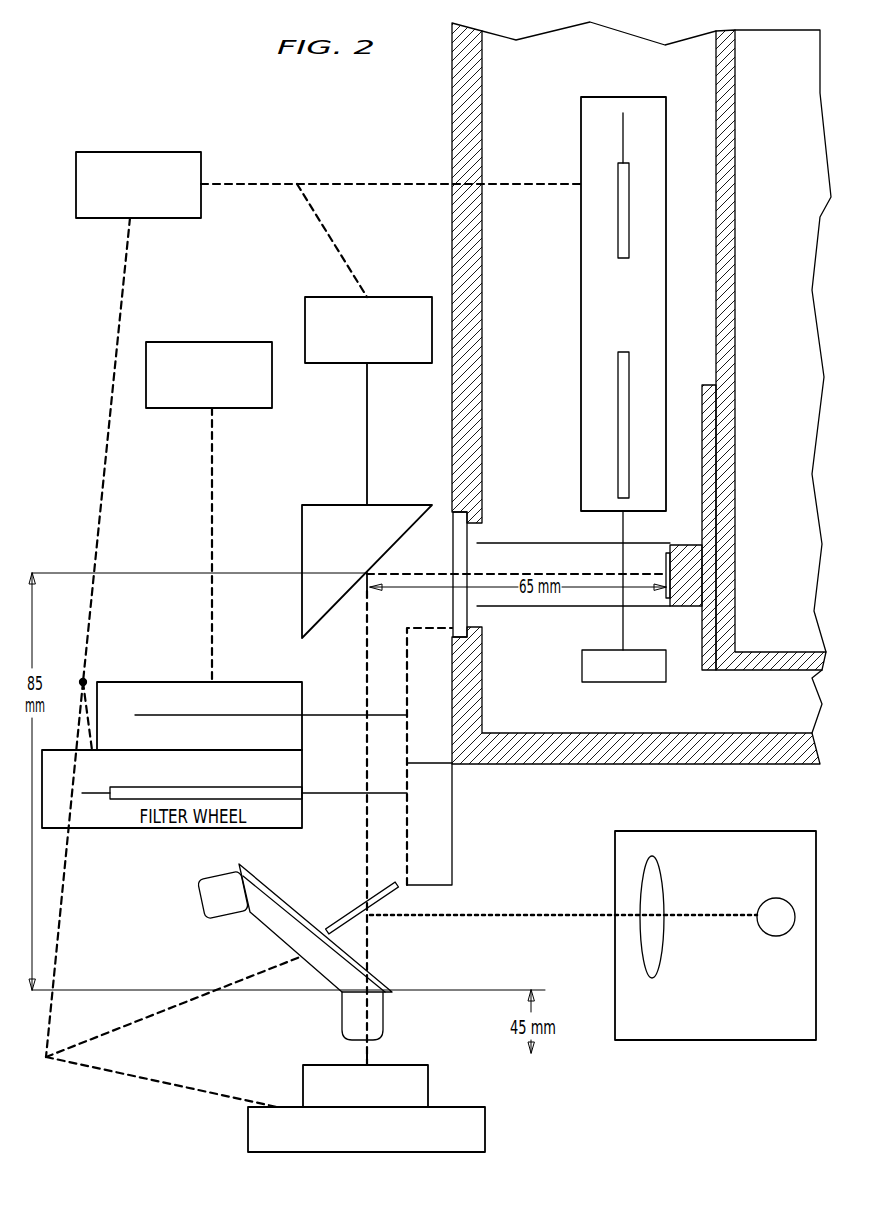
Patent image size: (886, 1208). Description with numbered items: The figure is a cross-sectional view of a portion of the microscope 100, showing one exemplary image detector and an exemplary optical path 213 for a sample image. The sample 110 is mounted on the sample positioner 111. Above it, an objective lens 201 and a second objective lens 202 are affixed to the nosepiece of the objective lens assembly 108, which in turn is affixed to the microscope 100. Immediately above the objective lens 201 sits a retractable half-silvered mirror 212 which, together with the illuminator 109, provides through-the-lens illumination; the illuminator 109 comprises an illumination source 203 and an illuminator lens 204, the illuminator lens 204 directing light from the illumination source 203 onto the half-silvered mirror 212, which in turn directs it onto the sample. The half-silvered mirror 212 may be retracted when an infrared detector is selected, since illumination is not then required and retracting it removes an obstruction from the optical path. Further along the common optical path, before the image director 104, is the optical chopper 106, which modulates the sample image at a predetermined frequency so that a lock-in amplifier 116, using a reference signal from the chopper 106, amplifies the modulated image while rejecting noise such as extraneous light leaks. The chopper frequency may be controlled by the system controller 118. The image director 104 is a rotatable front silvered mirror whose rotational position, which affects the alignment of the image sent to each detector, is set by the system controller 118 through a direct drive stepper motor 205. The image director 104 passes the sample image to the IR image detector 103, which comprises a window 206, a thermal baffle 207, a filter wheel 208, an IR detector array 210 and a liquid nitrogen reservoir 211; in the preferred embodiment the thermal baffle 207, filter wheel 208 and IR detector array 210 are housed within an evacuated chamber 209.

The microscope 100 is at (118, 103).
The system controller 118 is at (173, 152).
The lock-in amplifier 116 is at (238, 342).
The direct drive stepper motor 205 is at (400, 297).
The image director 104 is at (310, 505).
The optical chopper 106 is at (236, 682).
The IR image detector 103 is at (452, 122).
The evacuated chamber 209 is at (496, 93).
The liquid nitrogen reservoir 211 is at (737, 72).
The filter wheel 208 is at (581, 350).
The thermal baffle 207 is at (523, 543).
The window 206 is at (453, 618).
The IR detector array 210 is at (655, 604).
The objective lens assembly 108 is at (262, 884).
The objective lens 202 is at (197, 876).
The retractable half-silvered mirror 212 is at (352, 915).
The objective lens 201 is at (342, 1017).
The optical path 213 is at (370, 1052).
The sample 110 is at (303, 1078).
The sample positioner 111 is at (485, 1126).
The illuminator 109 is at (715, 912).
The illumination source 203 is at (761, 903).
The illuminator lens 204 is at (660, 968).